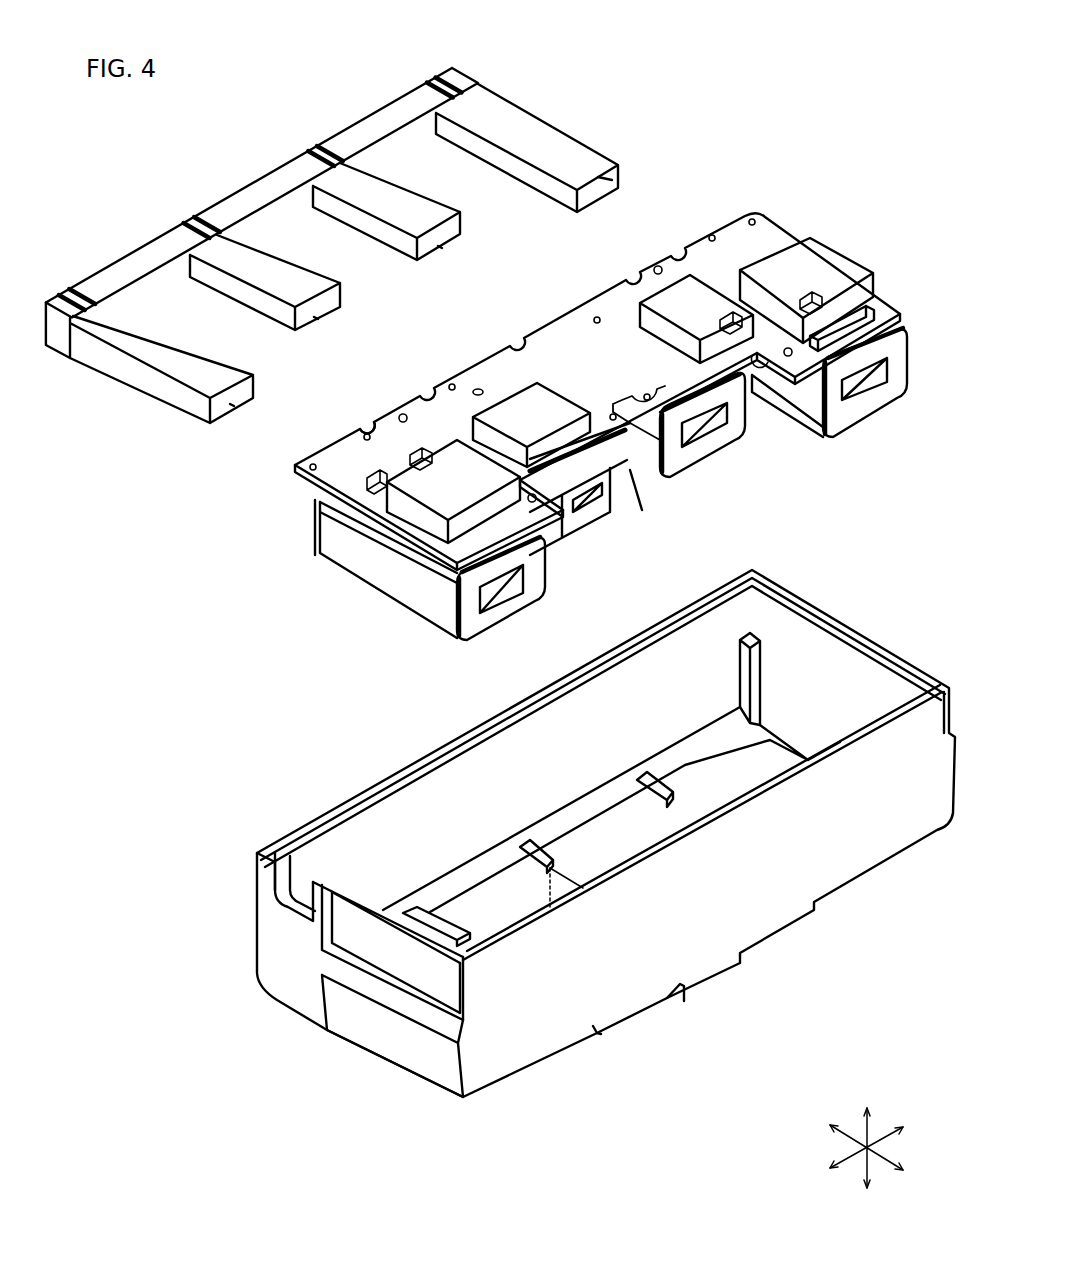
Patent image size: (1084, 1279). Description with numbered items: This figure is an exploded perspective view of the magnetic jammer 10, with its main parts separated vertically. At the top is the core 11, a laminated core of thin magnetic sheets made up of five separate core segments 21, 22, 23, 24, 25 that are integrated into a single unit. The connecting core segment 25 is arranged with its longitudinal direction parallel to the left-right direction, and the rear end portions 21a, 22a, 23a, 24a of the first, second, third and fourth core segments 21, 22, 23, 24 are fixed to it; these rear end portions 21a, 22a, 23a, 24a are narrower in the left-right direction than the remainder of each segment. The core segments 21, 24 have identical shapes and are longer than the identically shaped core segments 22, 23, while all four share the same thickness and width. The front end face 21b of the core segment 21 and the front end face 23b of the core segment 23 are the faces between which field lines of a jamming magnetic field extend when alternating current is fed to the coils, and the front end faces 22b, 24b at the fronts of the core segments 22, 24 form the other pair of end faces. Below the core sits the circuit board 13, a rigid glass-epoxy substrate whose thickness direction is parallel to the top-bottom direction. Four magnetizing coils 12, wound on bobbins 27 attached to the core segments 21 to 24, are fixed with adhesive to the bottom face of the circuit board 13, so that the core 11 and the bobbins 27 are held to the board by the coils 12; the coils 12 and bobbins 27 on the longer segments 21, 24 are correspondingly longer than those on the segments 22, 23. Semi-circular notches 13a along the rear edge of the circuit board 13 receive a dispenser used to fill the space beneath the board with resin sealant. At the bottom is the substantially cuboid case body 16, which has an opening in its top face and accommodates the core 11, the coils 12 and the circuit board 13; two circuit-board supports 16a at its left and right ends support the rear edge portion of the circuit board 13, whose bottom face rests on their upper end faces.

The magnetic jammer 10 is at (782, 59).
The core 11 is at (262, 187).
The connecting core segment 25 is at (380, 105).
The magnetizing coils 12 is at (430, 632).
The circuit board 13 is at (760, 214).
The semi-circular notches 13a is at (672, 252).
The case body 16 is at (390, 792).
The circuit-board supports 16a is at (750, 632).
The first core segment 21 is at (500, 172).
The rear end portion 21a is at (448, 80).
The front end face 21b is at (612, 180).
The second core segment 22 is at (360, 228).
The rear end portion 22a is at (328, 150).
The second terminal end face 22b is at (443, 249).
The third core segment 23 is at (232, 298).
The rear end portion 23a is at (205, 225).
The front end face 23b is at (318, 320).
The fourth core segment 24 is at (135, 390).
The rear end portion 24a is at (82, 295).
The fourth terminal end face 24b is at (235, 408).
The bobbins 27 is at (493, 650).